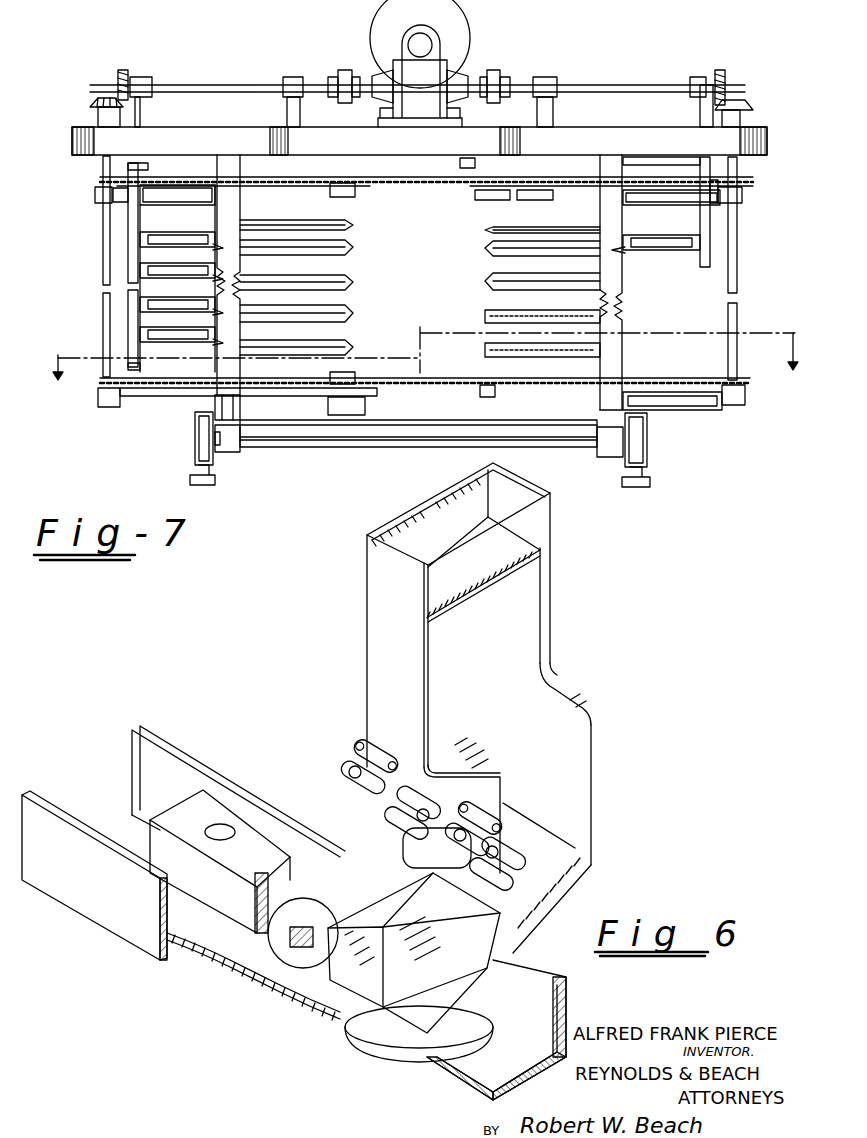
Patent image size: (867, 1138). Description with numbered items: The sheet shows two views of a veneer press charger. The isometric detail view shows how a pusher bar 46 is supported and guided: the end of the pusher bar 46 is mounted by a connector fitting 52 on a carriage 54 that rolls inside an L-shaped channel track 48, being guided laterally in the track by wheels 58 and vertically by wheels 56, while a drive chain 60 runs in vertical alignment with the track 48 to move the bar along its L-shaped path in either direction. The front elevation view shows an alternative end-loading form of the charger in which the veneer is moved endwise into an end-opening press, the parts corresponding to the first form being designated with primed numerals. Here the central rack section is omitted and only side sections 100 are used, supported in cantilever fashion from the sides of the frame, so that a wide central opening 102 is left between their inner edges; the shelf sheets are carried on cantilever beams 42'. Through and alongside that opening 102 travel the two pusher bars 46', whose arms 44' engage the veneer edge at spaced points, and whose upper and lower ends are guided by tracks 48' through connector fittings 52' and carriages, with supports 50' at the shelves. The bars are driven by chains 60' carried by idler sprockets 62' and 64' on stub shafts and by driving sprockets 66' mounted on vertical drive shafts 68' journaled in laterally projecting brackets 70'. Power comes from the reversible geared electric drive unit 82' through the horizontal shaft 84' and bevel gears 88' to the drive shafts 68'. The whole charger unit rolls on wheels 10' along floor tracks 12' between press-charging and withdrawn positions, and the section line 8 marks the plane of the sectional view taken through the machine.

In FIG. 7, the geared electric drive unit 82' is at (440, 63).
In FIG. 7, the shaft 84' is at (417, 88).
In FIG. 7, the bevel gears 88' is at (421, 83).
In FIG. 7, the drive chains 60' is at (426, 256).
In FIG. 7, the driven sprockets 66' is at (417, 296).
In FIG. 7, the vertical drive shafts 68' is at (421, 268).
In FIG. 7, the pusher bars 46' is at (391, 263).
In FIG. 7, the connector fittings 52' is at (454, 174).
In FIG. 7, the tracks 48' is at (449, 265).
In FIG. 7, the idler sprocket 62' is at (364, 283).
In FIG. 7, the idler sprocket 64' is at (496, 300).
In FIG. 7, the brackets 70' is at (177, 278).
In FIG. 7, the arms 44' is at (420, 274).
In FIG. 7, the shelf supports 50' is at (410, 303).
In FIG. 7, the central openings 102 is at (418, 287).
In FIG. 7, the side sections 100 is at (340, 272).
In FIG. 7, the cantilever beams 42' is at (575, 331).
In FIG. 7, the wheels 10' is at (458, 429).
In FIG. 7, the tracks 12' is at (439, 476).
In FIG. 7, the section line 8- 8 is at (424, 350).
In FIG. 6, the pusher bar 46 is at (457, 668).
In FIG. 6, the connector fittings 52 is at (569, 839).
In FIG. 6, the drive chains 60 is at (448, 815).
In FIG. 6, the L-shaped tracks 48 is at (294, 913).
In FIG. 6, the wheels 56 is at (300, 963).
In FIG. 6, the wheels 58 is at (202, 930).
In FIG. 6, the carriages 54 is at (345, 978).